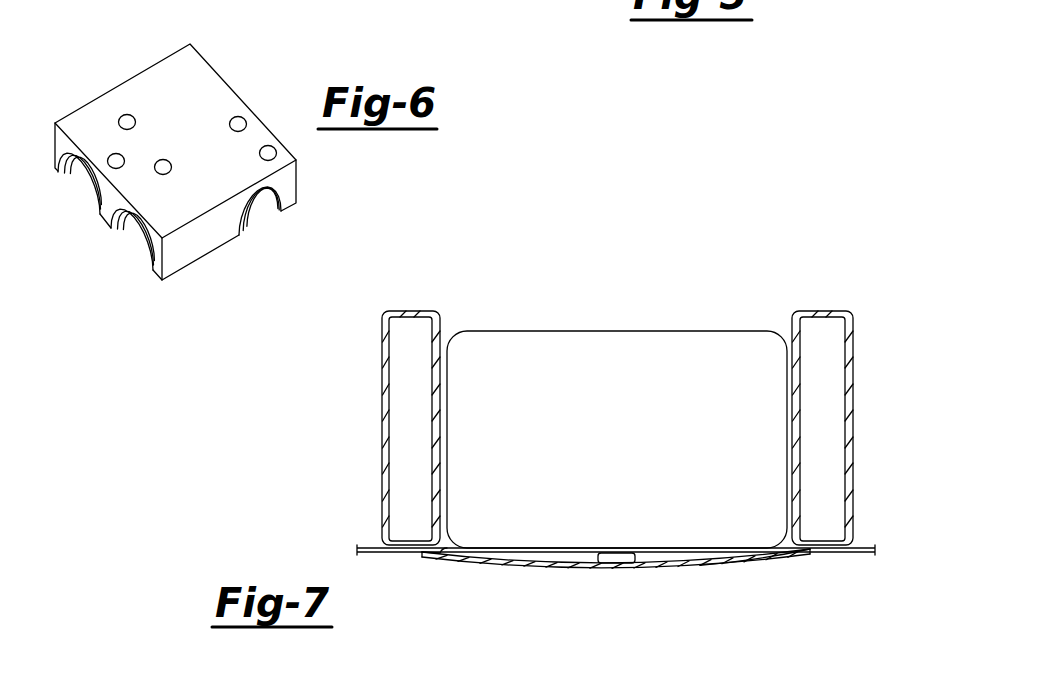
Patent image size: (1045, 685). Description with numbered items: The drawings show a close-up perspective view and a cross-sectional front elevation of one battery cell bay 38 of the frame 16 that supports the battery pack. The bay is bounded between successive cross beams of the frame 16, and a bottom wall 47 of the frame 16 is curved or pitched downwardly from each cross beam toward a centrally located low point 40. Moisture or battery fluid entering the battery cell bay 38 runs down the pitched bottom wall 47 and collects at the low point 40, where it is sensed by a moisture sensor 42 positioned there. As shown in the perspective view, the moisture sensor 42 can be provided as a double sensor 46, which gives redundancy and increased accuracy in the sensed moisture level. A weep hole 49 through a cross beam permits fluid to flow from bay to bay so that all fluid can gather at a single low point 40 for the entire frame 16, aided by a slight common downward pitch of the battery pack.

In FIG. 7, the frame 16 is at (720, 293).
In FIG. 7, the battery cell bay 38 is at (663, 348).
In FIG. 7, the low point 40 is at (582, 560).
In FIG. 6, the moisture sensor 42 is at (164, 72).
In FIG. 7, the moisture sensor 42 is at (619, 555).
In FIG. 6, the double sensor 46 is at (152, 258).
In FIG. 7, the bottom wall 47 is at (732, 563).
In FIG. 7, the weep hole 49 is at (438, 553).